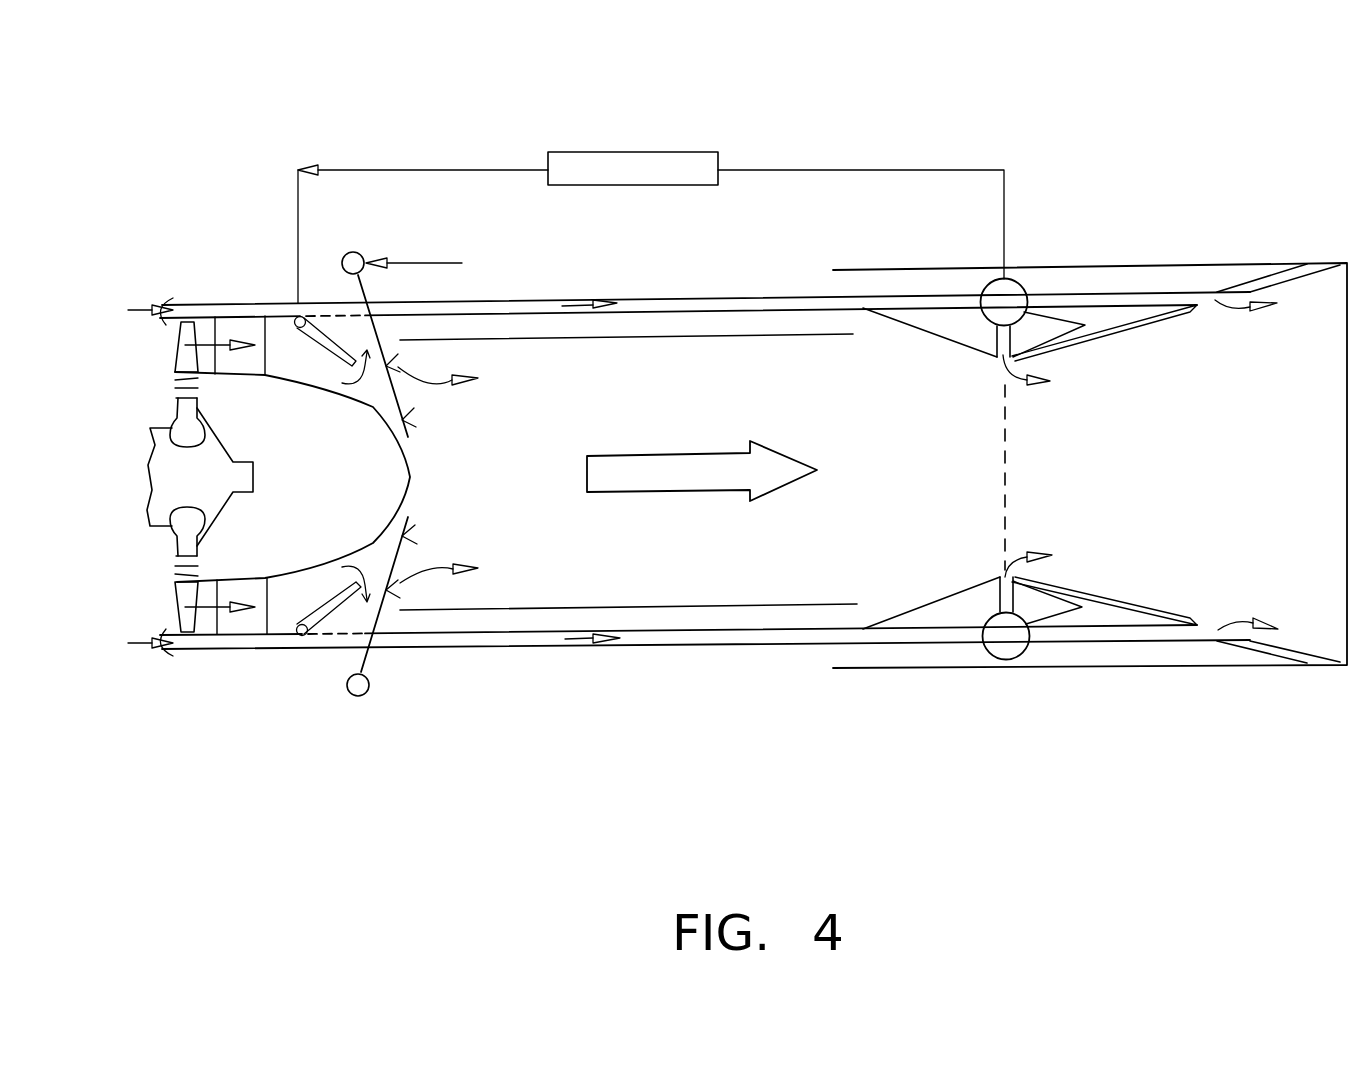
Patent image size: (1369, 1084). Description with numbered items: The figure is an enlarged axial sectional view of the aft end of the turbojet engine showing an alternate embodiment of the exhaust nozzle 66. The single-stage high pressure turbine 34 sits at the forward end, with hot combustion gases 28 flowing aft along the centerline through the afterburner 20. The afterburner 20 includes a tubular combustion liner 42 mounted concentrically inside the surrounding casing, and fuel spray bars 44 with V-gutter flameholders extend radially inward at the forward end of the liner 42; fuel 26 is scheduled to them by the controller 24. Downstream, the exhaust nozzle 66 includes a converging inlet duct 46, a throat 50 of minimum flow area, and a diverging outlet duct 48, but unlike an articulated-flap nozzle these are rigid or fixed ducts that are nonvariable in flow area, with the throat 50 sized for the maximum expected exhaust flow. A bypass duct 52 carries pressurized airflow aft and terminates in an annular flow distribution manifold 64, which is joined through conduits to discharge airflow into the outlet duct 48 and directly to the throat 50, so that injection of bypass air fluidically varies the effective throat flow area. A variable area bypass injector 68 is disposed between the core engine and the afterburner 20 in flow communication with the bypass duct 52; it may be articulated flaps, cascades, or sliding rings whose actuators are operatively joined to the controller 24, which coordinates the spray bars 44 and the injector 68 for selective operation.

The afterburner 20 is at (643, 657).
The controller 24 is at (658, 152).
The fuel 26 is at (441, 262).
The combustion gases 28 is at (648, 453).
The high pressure turbine 34 is at (146, 372).
The combustion liner 42 is at (553, 607).
The fuel spray bars 44 is at (418, 524).
The converging inlet duct 46 is at (932, 450).
The diverging outlet duct 48 is at (1142, 450).
The throat 50 is at (1005, 517).
The bypass duct 52 is at (658, 297).
The flow distribution manifold 64 is at (1016, 280).
The exhaust nozzle 66 is at (1165, 238).
The variable area bypass injector 68 is at (335, 612).